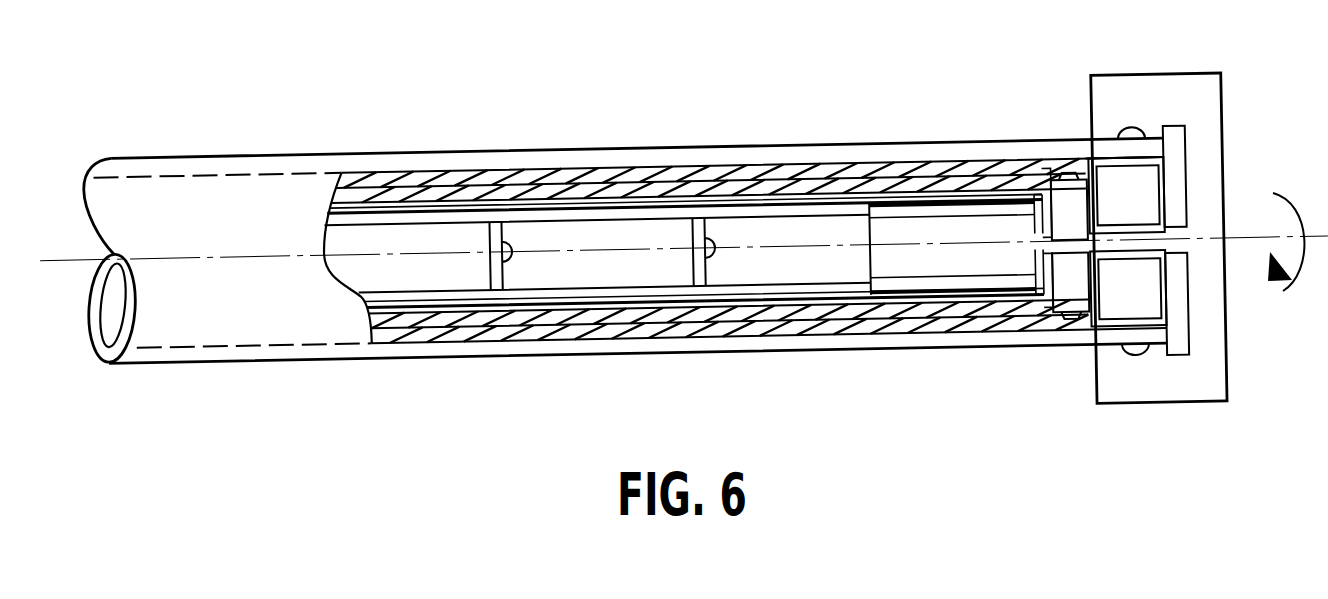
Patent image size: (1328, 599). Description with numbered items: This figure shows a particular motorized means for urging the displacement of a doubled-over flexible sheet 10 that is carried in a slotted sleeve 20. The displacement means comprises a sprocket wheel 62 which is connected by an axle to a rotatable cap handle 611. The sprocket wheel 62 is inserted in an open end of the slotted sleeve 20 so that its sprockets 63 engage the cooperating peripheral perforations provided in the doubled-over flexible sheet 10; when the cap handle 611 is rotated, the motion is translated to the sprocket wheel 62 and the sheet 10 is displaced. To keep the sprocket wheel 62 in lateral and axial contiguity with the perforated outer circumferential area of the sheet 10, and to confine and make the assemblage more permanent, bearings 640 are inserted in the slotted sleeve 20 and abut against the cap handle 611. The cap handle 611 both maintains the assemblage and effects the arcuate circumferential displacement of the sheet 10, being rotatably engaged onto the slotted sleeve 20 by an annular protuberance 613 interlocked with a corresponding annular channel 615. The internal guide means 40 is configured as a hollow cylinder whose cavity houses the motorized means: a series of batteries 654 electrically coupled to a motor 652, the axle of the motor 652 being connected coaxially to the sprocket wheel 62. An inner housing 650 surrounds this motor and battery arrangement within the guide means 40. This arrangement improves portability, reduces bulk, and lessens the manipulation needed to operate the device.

The doubled-over flexible sheet 10 is at (652, 335).
The slotted sleeve 20 is at (670, 148).
The internal guide means 40 is at (542, 328).
The sprocket wheel 62 is at (1082, 228).
The sprockets 63 is at (1068, 318).
The cap handle 611 is at (1210, 113).
The annular protuberance 613 is at (1120, 135).
The annular channel 615 is at (1133, 127).
The bearings 640 is at (1153, 208).
The inner housing tube 650 is at (770, 298).
The motor 652 is at (868, 255).
The batteries 654 is at (430, 283).